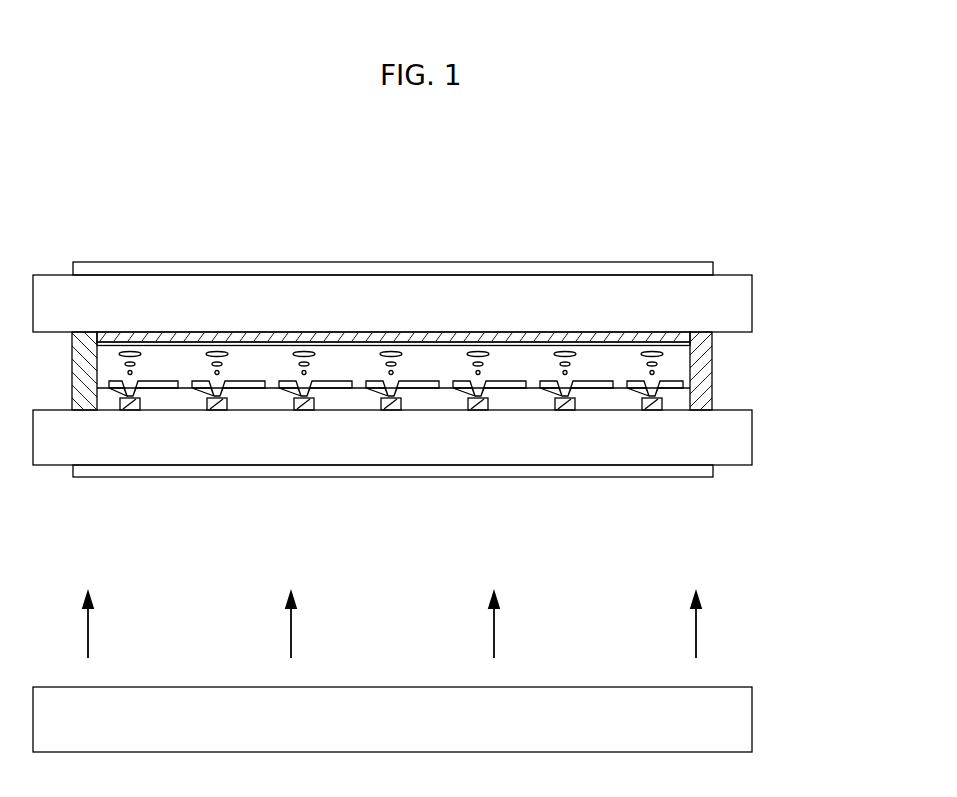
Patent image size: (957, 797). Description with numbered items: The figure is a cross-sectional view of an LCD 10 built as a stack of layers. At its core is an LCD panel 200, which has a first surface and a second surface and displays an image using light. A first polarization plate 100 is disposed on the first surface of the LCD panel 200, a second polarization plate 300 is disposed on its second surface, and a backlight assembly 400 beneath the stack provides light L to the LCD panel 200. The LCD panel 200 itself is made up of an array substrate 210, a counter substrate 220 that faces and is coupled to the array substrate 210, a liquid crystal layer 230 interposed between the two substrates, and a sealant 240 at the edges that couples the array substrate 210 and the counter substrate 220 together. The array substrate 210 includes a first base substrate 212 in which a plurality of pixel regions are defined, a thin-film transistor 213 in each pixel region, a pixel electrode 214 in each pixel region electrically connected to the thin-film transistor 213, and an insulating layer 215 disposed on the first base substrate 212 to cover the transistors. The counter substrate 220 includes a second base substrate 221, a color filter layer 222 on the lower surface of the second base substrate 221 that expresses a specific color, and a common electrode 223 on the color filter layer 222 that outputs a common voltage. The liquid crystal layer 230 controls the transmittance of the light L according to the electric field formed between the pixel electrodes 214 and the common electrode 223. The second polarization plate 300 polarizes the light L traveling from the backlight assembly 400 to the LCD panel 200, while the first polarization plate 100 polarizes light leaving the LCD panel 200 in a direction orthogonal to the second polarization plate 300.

The LCD 10 is at (448, 140).
The first polarization plate 100 is at (585, 268).
The LCD panel 200 is at (827, 308).
The array substrate 210 is at (762, 380).
The first base substrate 212 is at (91, 450).
The thin-film transistor 213 is at (128, 410).
The pixel electrode 214 is at (158, 385).
The insulating layer 215 is at (186, 400).
The counter substrate 220 is at (205, 193).
The second base substrate 221 is at (92, 288).
The color filter layer 222 is at (158, 335).
The common electrode 223 is at (243, 343).
The liquid crystal layer 230 is at (677, 360).
The sealant 240 is at (705, 372).
The second polarization plate 300 is at (592, 480).
The backlight assembly 400 is at (737, 722).
The light L is at (696, 635).